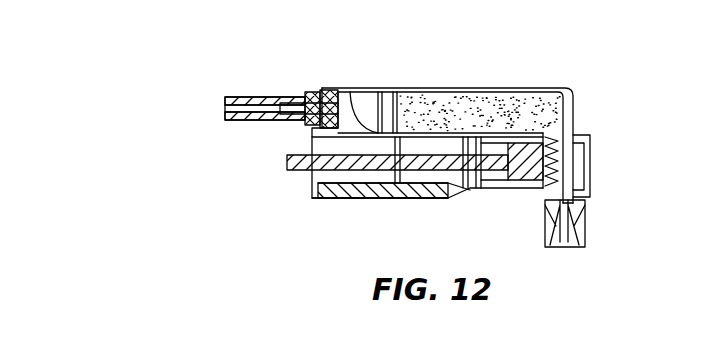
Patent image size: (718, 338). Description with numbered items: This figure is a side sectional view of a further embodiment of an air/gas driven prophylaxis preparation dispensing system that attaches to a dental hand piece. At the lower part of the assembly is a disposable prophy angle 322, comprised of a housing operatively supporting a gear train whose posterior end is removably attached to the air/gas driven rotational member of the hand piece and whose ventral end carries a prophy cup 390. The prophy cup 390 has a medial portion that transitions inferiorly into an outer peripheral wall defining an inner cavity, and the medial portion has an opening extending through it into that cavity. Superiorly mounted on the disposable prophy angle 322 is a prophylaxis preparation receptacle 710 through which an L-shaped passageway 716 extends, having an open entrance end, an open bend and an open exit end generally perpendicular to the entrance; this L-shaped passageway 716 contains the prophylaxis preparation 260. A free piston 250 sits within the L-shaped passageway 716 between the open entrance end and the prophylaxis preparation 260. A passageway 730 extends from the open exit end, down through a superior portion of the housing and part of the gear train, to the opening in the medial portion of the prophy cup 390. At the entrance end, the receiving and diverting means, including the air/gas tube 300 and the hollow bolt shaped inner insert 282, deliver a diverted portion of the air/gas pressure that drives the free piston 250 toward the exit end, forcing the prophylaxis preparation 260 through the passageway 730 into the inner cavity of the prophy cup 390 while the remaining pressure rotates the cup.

The air/gas tube 300 is at (242, 98).
The hollow bolt shaped inner insert 282 is at (302, 88).
The free piston 250 is at (375, 111).
The prophylaxis preparation 260 is at (422, 110).
The L-shaped passageway 716 is at (476, 96).
The prophylaxis preparation receptacle 710 is at (505, 85).
The passageway 730 is at (567, 124).
The disposable prophy angle 322 is at (336, 203).
The prophy cup 390 is at (597, 228).